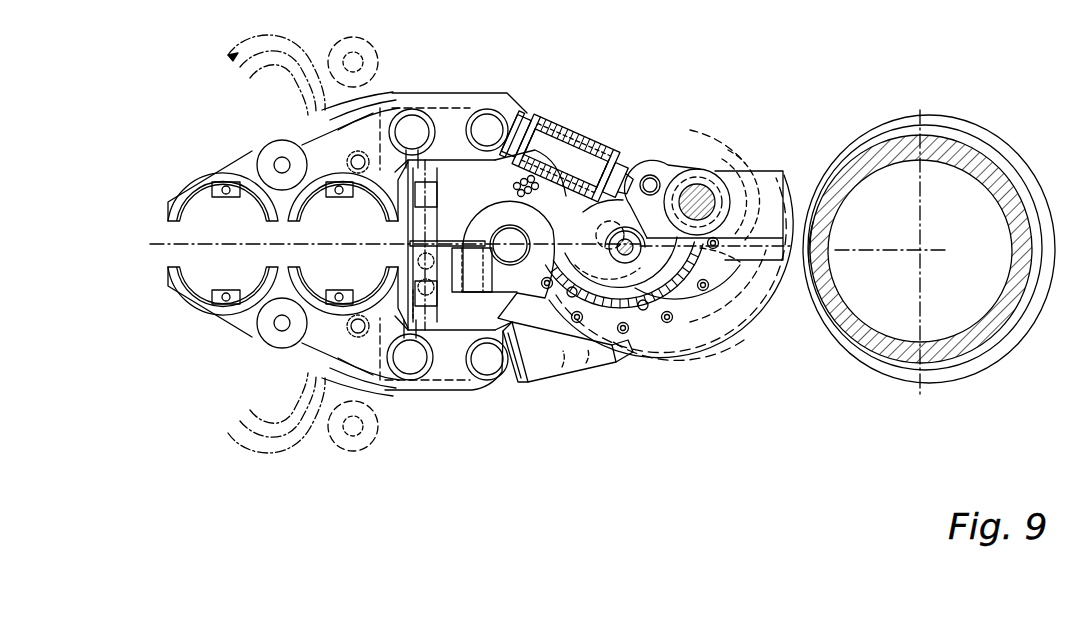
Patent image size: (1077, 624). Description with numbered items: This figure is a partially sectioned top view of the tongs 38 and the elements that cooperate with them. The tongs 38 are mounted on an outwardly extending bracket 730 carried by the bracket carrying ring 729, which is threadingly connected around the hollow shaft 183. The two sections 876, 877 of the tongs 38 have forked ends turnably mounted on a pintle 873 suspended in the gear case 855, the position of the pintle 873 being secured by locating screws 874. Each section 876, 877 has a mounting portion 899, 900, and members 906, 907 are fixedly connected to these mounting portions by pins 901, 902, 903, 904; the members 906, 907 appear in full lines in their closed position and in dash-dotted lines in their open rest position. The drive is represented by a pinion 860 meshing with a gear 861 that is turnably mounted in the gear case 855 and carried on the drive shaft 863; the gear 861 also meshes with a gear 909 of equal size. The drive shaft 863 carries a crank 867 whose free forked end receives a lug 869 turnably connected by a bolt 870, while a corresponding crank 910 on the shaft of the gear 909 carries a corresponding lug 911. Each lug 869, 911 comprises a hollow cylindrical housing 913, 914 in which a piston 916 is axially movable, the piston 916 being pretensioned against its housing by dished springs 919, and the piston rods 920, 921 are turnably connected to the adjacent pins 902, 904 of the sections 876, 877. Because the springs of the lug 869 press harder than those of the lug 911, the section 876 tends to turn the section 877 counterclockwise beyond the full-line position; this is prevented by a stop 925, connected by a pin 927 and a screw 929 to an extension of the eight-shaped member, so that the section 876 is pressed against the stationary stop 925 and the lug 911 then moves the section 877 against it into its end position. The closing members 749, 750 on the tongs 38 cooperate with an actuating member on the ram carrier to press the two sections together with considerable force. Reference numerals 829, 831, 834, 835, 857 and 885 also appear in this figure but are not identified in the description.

The tongs 38 is at (192, 148).
The hollow shaft 183 is at (838, 162).
The bracket carrying ring 729 is at (806, 196).
The bracket 730 is at (742, 232).
The closing member 749 is at (428, 328).
The closing member 750 is at (421, 176).
The gear 829 is at (634, 270).
The flange recess 831 is at (724, 256).
The gear hub 834 is at (596, 242).
The gear ring 835 is at (618, 262).
The gear case 855 is at (582, 222).
The bolt 857 is at (712, 286).
The pinion 860 is at (601, 224).
The gear 861 is at (730, 182).
The drive shaft 863 is at (708, 204).
The crank 867 is at (752, 178).
The lug 869 is at (692, 133).
The bolt 870 is at (668, 160).
The pintle 873 is at (518, 234).
The locating screws 874 is at (478, 292).
The section of the tongs 876 is at (276, 138).
The section of the tongs 877 is at (280, 348).
The pawl 885 is at (625, 238).
The mounting portion 899 is at (524, 186).
The mounting portion 900 is at (492, 300).
The pin 901 is at (422, 130).
The pin 902 is at (488, 128).
The pin 903 is at (414, 360).
The pin 904 is at (486, 362).
The member 906 is at (340, 132).
The member 907 is at (344, 354).
The gear 909 is at (738, 260).
The crank 910 is at (730, 354).
The lug 911 is at (618, 343).
The hollow cylindrical housing 913 is at (548, 112).
The hollow cylindrical housing 914 is at (536, 381).
The piston 916 is at (530, 112).
The dished springs 919 is at (606, 132).
The piston rod 920 is at (512, 112).
The piston rod 921 is at (510, 381).
The stop 925 is at (421, 320).
The pin 927 is at (414, 288).
The screw 929 is at (416, 264).